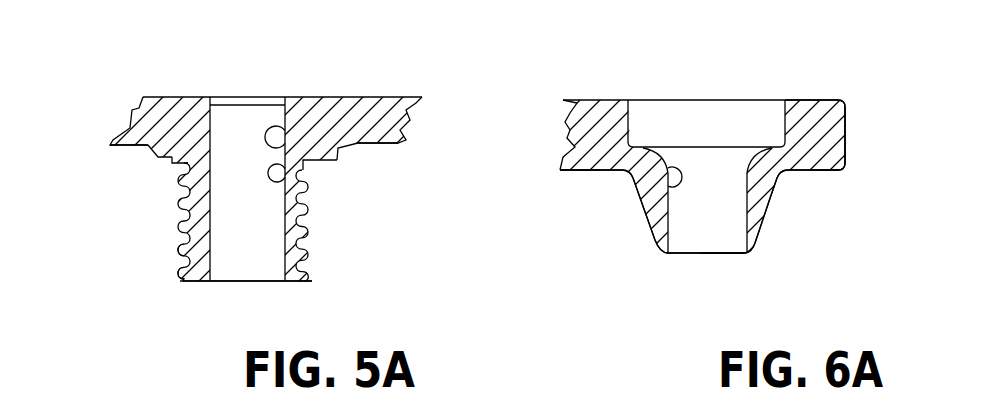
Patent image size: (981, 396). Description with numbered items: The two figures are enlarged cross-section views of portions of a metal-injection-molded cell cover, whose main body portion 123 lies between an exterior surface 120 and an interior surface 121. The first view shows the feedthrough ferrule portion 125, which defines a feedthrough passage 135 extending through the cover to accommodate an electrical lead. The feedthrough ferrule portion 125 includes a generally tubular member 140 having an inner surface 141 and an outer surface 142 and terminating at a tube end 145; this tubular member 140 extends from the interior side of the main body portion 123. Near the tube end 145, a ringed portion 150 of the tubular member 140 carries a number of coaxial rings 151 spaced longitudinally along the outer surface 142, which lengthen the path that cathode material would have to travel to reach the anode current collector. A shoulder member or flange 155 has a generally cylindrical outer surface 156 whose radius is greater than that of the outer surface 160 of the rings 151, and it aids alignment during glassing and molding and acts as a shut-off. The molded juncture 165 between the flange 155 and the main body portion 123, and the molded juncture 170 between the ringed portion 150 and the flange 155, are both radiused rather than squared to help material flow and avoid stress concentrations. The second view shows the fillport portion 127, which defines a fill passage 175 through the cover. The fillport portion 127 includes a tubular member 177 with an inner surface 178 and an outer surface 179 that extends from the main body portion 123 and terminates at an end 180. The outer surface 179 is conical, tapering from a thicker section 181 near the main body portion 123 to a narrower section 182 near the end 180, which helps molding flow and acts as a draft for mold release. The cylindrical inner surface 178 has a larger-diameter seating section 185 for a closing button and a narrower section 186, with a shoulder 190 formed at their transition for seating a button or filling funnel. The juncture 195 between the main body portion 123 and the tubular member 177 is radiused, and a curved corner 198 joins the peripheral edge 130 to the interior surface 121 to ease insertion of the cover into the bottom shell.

In FIG. 5A, the exterior surface 120 is at (338, 96).
In FIG. 6A, the exterior surface 120 is at (790, 100).
In FIG. 5A, the interior surface 121 is at (366, 145).
In FIG. 6A, the interior surface 121 is at (810, 172).
In FIG. 5A, the main body portion 123 is at (407, 94).
In FIG. 6A, the main body portion 123 is at (581, 96).
In FIG. 5A, the feedthrough ferrule portion 125 is at (332, 246).
In FIG. 6A, the fillport portion 127 is at (582, 203).
In FIG. 6A, the peripheral edge 130 is at (849, 114).
In FIG. 5A, the feedthrough passage 135 is at (292, 126).
In FIG. 5A, the tubular member 140 is at (178, 208).
In FIG. 5A, the inner surface 141 is at (303, 177).
In FIG. 5A, the outer surface 142 is at (307, 185).
In FIG. 5A, the tube end 145 is at (194, 283).
In FIG. 5A, the ringed portion 150 is at (182, 253).
In FIG. 5A, the coaxial rings 151 is at (181, 277).
In FIG. 5A, the shoulder member or flange 155 is at (157, 156).
In FIG. 5A, the cylindrical outer surface 156 is at (343, 152).
In FIG. 5A, the outer surface of the rings 160 is at (316, 236).
In FIG. 5A, the molded juncture 165 is at (147, 145).
In FIG. 5A, the molded juncture 170 is at (186, 165).
In FIG. 6A, the fill passage 175 is at (659, 165).
In FIG. 6A, the tubular member 177 is at (752, 249).
In FIG. 6A, the inner surface 178 is at (690, 255).
In FIG. 6A, the outer surface 179 is at (644, 205).
In FIG. 6A, the end or edge 180 is at (661, 255).
In FIG. 6A, the wider or thicker section 181 is at (780, 173).
In FIG. 6A, the narrower section 182 is at (757, 234).
In FIG. 6A, the seating section 185 is at (800, 100).
In FIG. 6A, the narrower section 186 is at (757, 190).
In FIG. 6A, the shoulder or seat 190 is at (748, 147).
In FIG. 6A, the juncture or intersection 195 is at (622, 172).
In FIG. 6A, the curved corner 198 is at (847, 158).